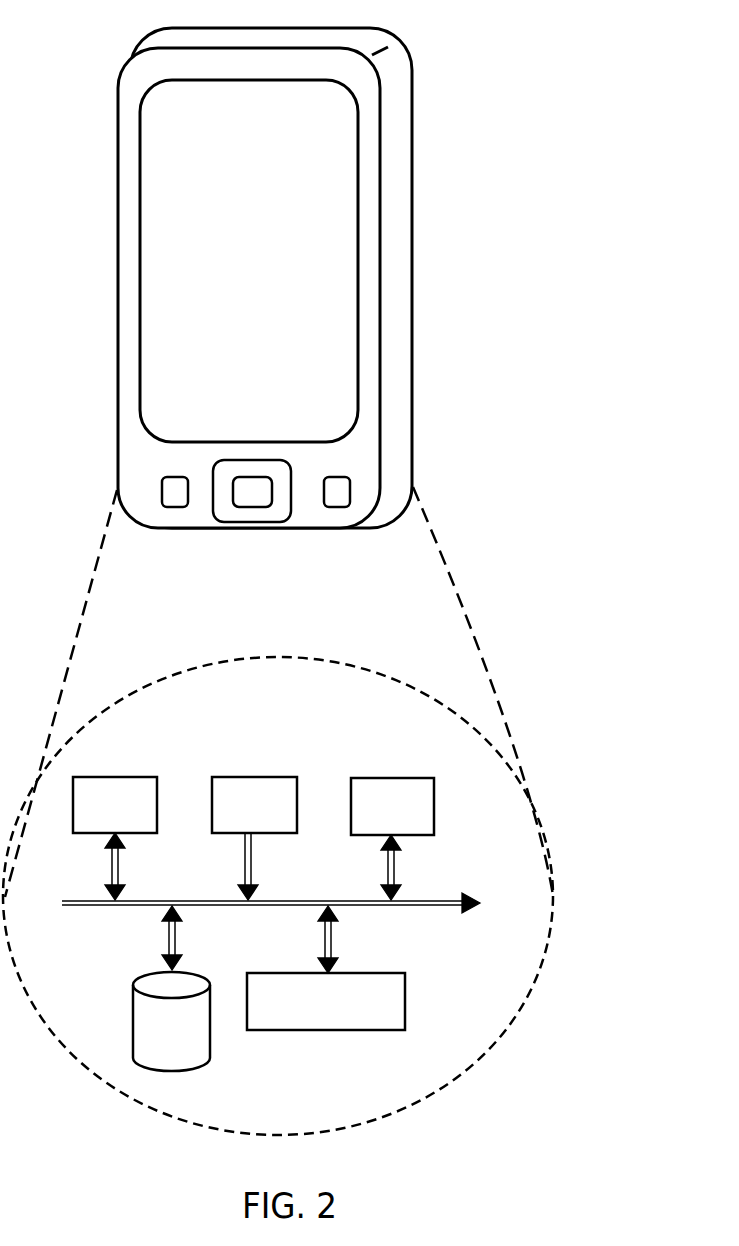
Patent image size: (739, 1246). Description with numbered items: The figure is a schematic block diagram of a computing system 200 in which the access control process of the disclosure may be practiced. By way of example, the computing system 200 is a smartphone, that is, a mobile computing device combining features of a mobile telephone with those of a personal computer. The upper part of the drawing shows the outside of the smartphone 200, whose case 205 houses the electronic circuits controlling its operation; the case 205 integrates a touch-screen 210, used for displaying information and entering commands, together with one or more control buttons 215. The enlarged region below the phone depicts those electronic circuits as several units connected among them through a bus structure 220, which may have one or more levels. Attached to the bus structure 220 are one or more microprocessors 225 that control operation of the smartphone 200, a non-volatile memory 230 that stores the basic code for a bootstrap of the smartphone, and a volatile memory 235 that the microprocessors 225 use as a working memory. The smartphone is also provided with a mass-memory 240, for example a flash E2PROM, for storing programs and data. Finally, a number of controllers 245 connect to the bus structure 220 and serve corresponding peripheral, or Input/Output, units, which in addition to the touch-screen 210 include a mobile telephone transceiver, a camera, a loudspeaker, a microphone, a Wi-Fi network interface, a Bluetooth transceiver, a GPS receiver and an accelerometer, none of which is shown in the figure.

The computing system 200 is at (396, 270).
The case 205 is at (201, 288).
The touch-screen 210 is at (213, 150).
The control buttons 215 is at (199, 472).
The bus structure 220 is at (271, 909).
The microprocessors 225 is at (143, 818).
The non-volatile memory 230 is at (269, 818).
The volatile memory 235 is at (412, 819).
The mass-memory 240 is at (125, 988).
The controllers 245 is at (326, 997).